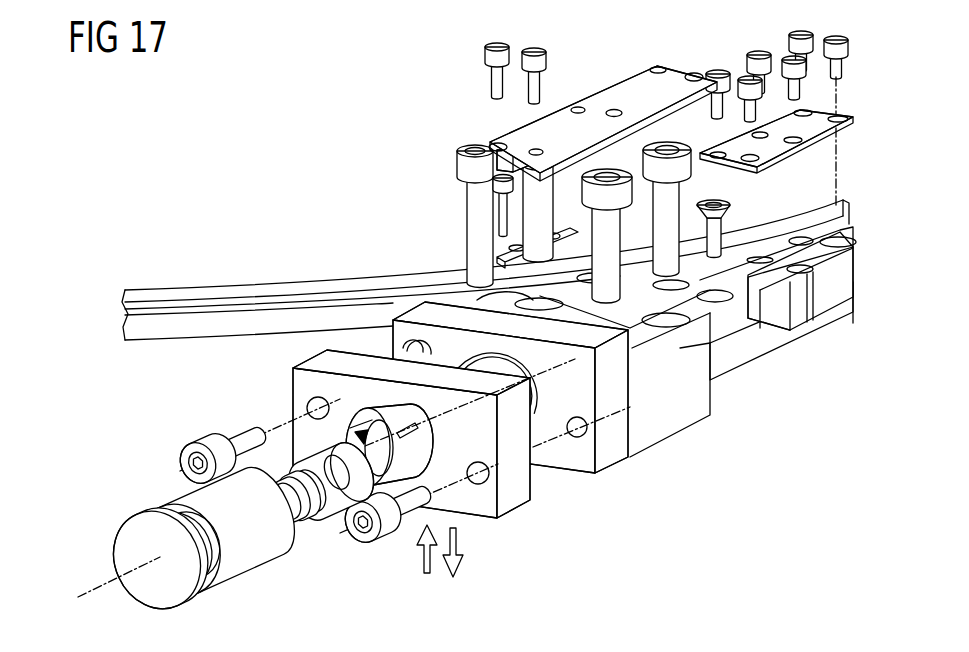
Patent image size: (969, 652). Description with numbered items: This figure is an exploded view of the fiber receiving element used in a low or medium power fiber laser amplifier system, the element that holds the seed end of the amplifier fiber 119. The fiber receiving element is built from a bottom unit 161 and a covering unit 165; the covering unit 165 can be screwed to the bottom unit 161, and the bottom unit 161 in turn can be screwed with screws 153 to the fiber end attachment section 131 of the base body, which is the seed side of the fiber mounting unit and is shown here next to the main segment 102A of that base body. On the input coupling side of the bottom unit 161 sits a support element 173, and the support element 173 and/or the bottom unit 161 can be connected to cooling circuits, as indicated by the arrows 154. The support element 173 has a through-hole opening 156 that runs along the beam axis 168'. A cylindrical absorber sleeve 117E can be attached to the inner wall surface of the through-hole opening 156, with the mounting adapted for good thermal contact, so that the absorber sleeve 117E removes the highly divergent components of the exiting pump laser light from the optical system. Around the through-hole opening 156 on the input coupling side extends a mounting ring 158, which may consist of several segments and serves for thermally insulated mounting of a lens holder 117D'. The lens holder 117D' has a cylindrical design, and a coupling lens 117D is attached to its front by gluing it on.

The amplifier fiber 119 is at (176, 302).
The main segment 102A is at (818, 277).
The fiber end attachment section 131 is at (748, 345).
The bottom unit 161 is at (668, 410).
The screws 153 is at (458, 170).
The covering unit 165 is at (630, 88).
The support element 173 is at (306, 358).
The through-hole opening 156 is at (306, 408).
The mounting ring 158 is at (414, 448).
The absorber sleeve 117E is at (306, 508).
The lens holder 117D' is at (215, 541).
The coupling lens 117D is at (160, 537).
The beam axis 168' is at (111, 563).
The arrows 154 is at (478, 561).